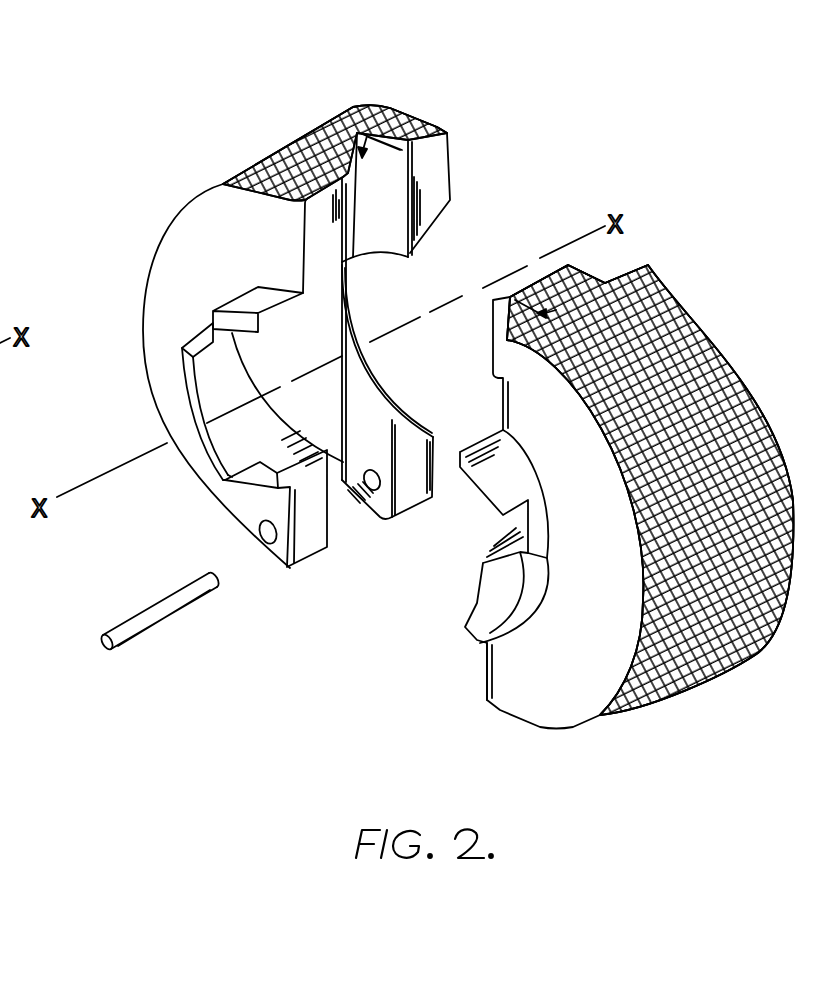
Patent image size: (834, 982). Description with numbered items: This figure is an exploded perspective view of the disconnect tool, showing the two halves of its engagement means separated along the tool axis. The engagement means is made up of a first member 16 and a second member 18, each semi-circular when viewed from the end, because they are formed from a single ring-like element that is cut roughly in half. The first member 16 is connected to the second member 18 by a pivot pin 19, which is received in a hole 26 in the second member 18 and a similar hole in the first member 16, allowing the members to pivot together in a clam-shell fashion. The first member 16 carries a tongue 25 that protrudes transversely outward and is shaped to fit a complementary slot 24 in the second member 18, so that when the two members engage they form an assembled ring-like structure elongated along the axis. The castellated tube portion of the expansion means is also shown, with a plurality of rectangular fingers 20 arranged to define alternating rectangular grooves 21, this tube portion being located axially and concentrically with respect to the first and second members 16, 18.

The first member 16 is at (654, 465).
The second member 18 is at (321, 336).
The pivot pin 19 is at (122, 647).
The fingers 20 is at (238, 323).
The grooves 21 is at (194, 330).
The slot 24 is at (387, 107).
The tongue 25 is at (577, 262).
The hole 26 is at (263, 541).